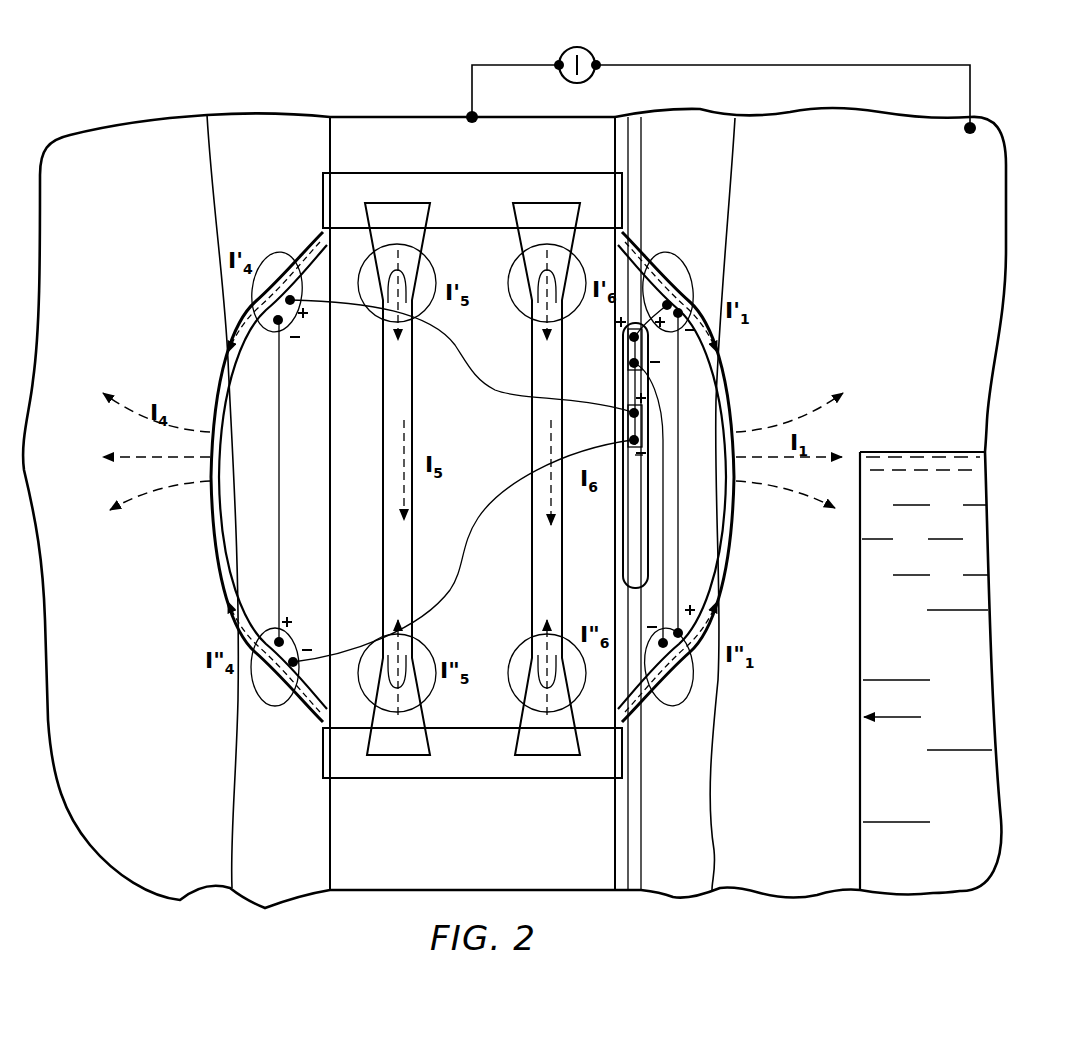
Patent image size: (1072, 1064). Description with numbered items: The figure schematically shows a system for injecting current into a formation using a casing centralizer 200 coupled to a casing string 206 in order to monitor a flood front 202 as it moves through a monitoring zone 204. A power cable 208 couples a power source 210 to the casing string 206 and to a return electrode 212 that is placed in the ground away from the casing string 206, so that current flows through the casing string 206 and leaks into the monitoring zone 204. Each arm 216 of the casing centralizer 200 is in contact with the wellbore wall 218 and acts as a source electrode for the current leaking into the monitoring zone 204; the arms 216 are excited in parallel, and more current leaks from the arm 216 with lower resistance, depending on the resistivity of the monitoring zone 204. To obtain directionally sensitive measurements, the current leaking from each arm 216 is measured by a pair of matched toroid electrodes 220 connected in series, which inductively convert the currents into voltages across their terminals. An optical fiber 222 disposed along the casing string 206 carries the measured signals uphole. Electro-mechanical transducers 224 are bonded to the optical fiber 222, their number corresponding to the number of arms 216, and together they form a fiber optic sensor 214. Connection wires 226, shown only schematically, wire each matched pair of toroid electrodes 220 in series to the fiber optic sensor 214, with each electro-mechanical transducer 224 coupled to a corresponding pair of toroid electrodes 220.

The casing centralizer 200 is at (623, 192).
The flood front 202 is at (962, 452).
The monitoring zone 204 is at (916, 239).
The casing string 206 is at (328, 135).
The power cable 208 is at (470, 76).
The power source 210 is at (598, 54).
The return electrode 212 is at (974, 126).
The fiber optic sensor 214 is at (641, 428).
The arm 216 is at (212, 390).
The wellbore wall 218 is at (215, 145).
The toroid electrodes 220 is at (500, 262).
The optical fiber 222 is at (646, 142).
The electro-mechanical transducers 224 is at (647, 392).
The connection wires 226 is at (278, 358).